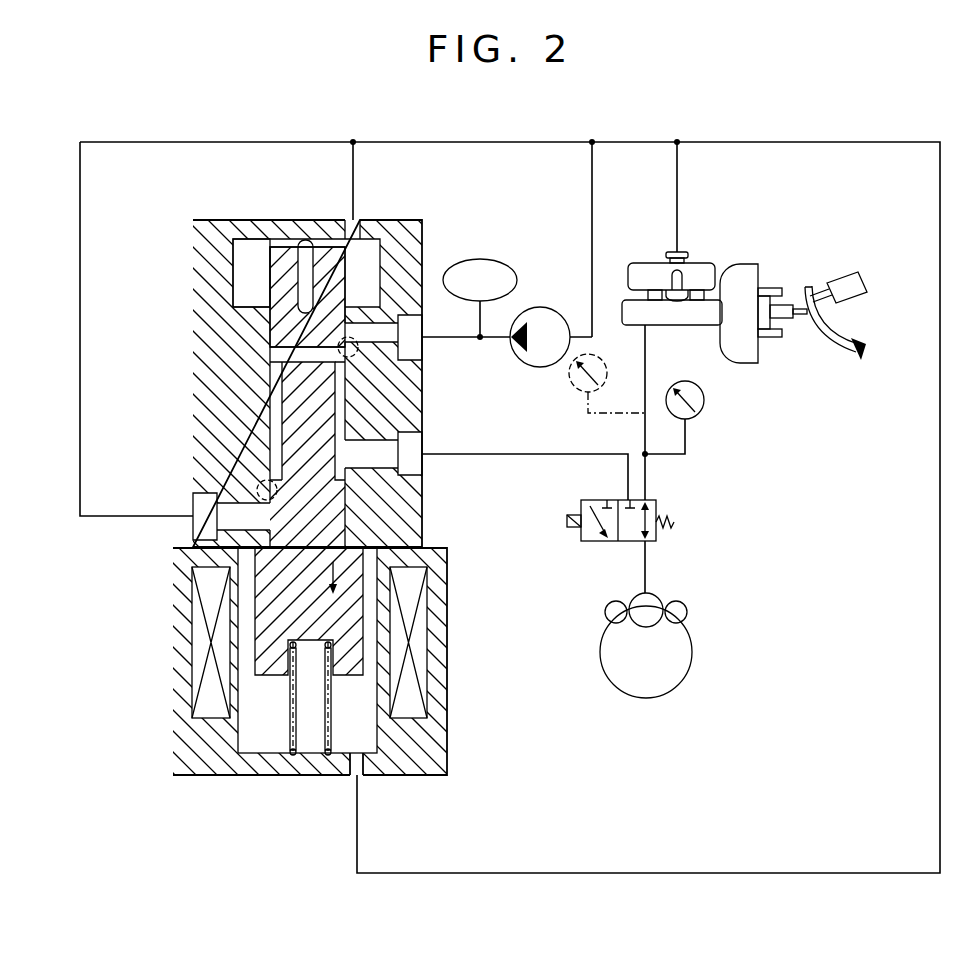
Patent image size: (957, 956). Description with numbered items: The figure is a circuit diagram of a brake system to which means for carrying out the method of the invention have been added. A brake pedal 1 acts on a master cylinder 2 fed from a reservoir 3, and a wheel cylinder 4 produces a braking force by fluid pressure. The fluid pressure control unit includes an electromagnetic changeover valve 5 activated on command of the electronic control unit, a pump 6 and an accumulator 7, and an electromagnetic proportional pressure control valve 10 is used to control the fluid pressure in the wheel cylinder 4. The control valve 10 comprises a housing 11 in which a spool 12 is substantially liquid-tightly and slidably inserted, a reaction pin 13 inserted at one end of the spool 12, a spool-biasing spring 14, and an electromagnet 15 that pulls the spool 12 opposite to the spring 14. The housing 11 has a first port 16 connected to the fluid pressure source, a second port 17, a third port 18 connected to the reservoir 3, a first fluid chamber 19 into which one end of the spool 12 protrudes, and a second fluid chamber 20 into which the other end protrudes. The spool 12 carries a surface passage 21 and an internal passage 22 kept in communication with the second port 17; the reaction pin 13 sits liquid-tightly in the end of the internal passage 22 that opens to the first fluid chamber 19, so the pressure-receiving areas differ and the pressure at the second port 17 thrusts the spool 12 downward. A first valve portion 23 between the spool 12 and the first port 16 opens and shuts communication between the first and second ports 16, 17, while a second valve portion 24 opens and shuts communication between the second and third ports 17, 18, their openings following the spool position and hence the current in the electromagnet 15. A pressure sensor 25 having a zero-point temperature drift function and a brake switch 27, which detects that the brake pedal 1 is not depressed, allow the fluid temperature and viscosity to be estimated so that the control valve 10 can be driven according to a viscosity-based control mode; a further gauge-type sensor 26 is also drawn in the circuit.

The brake pedal 1 is at (833, 347).
The master cylinder 2 is at (697, 317).
The reservoir 3 is at (645, 265).
The wheel cylinder 4 is at (650, 602).
The electromagnetic changeover valve 5 is at (657, 500).
The pump 6 is at (553, 307).
The accumulator 7 is at (480, 259).
The electromagnetic proportional pressure control valve 10 is at (186, 290).
The housing 11 is at (200, 235).
The spool 12 is at (282, 265).
The reaction pin 13 is at (305, 255).
The spool-biasing spring 14 is at (295, 755).
The electromagnet 15 is at (182, 647).
The first port 16 is at (408, 340).
The second port 17 is at (412, 462).
The third port 18 is at (200, 505).
The first fluid chamber 19 is at (243, 263).
The second fluid chamber 20 is at (270, 740).
The surface passage 21 is at (277, 405).
The internal passage 22 is at (305, 357).
The first valve portion 23 is at (352, 353).
The second valve portion 24 is at (260, 480).
The pressure sensor 25 is at (705, 409).
The pressure sensor 26 is at (569, 381).
The brake switch 27 is at (863, 278).